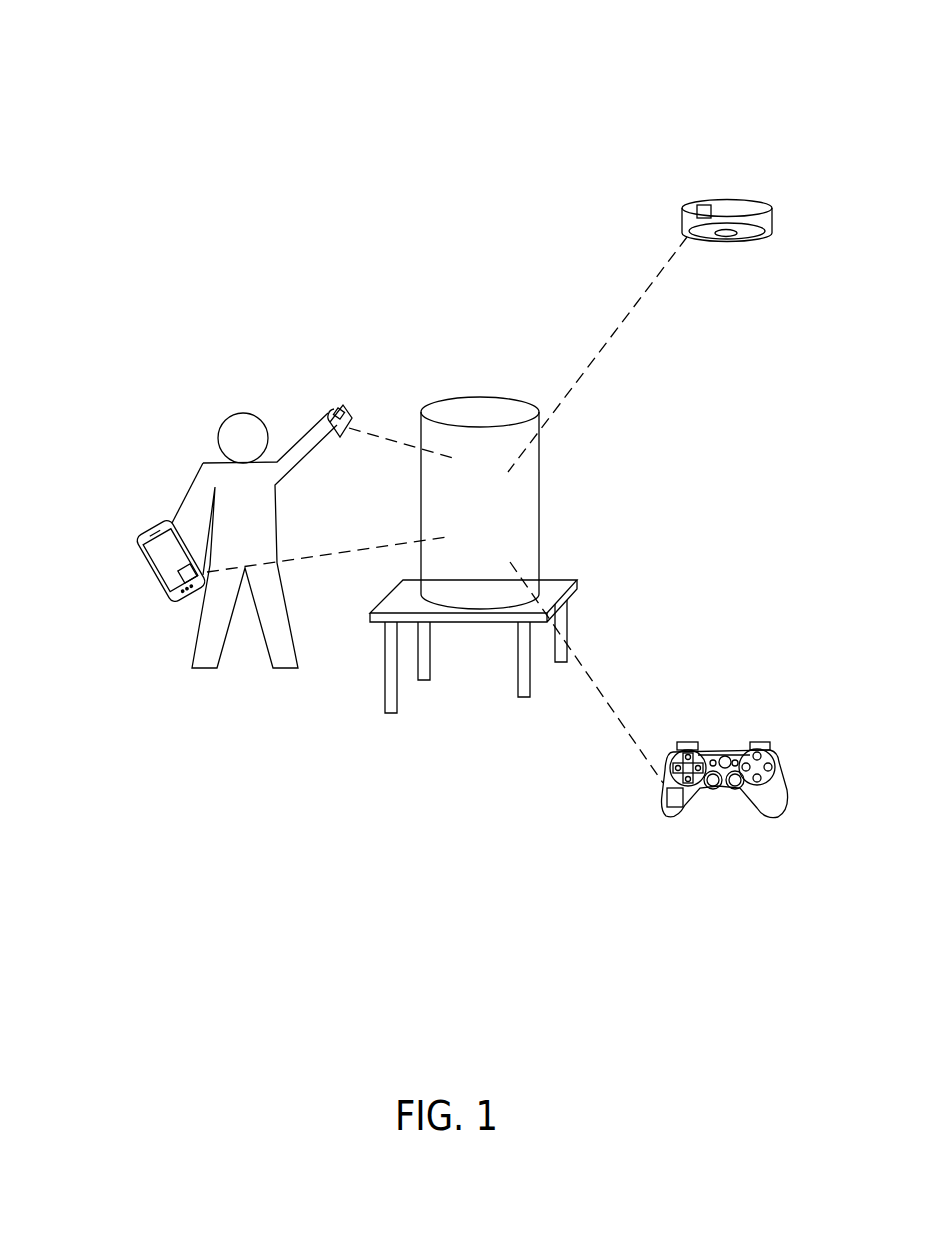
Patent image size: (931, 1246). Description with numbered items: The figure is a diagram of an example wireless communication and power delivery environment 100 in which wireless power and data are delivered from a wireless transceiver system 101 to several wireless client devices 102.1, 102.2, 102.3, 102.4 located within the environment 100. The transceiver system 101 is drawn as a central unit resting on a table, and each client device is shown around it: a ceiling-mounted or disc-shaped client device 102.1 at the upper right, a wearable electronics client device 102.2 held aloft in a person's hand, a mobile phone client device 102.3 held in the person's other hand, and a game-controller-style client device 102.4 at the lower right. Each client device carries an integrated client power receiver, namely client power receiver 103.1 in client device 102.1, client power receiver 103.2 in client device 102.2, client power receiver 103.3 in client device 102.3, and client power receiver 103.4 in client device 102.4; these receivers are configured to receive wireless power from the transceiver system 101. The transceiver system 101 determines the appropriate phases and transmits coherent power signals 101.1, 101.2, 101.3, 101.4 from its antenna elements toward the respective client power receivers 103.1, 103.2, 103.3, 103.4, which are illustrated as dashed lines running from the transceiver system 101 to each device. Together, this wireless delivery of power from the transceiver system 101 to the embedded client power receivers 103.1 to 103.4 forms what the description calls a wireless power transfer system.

The wireless communication and power delivery environment 100 is at (799, 81).
The wireless transceiver system 101 is at (475, 418).
The coherent power signal 101.1 is at (518, 460).
The coherent power signal 101.2 is at (440, 455).
The coherent power signal 101.3 is at (440, 537).
The coherent power signal 101.4 is at (510, 562).
The wireless client device 102.1 is at (734, 216).
The wireless client device 102.2 is at (292, 399).
The wireless client device 102.3 is at (136, 586).
The wireless client device 102.4 is at (732, 784).
The client power receiver 103.1 is at (697, 210).
The client power receiver 103.2 is at (330, 415).
The client power receiver 103.3 is at (167, 588).
The client power receiver 103.4 is at (667, 792).